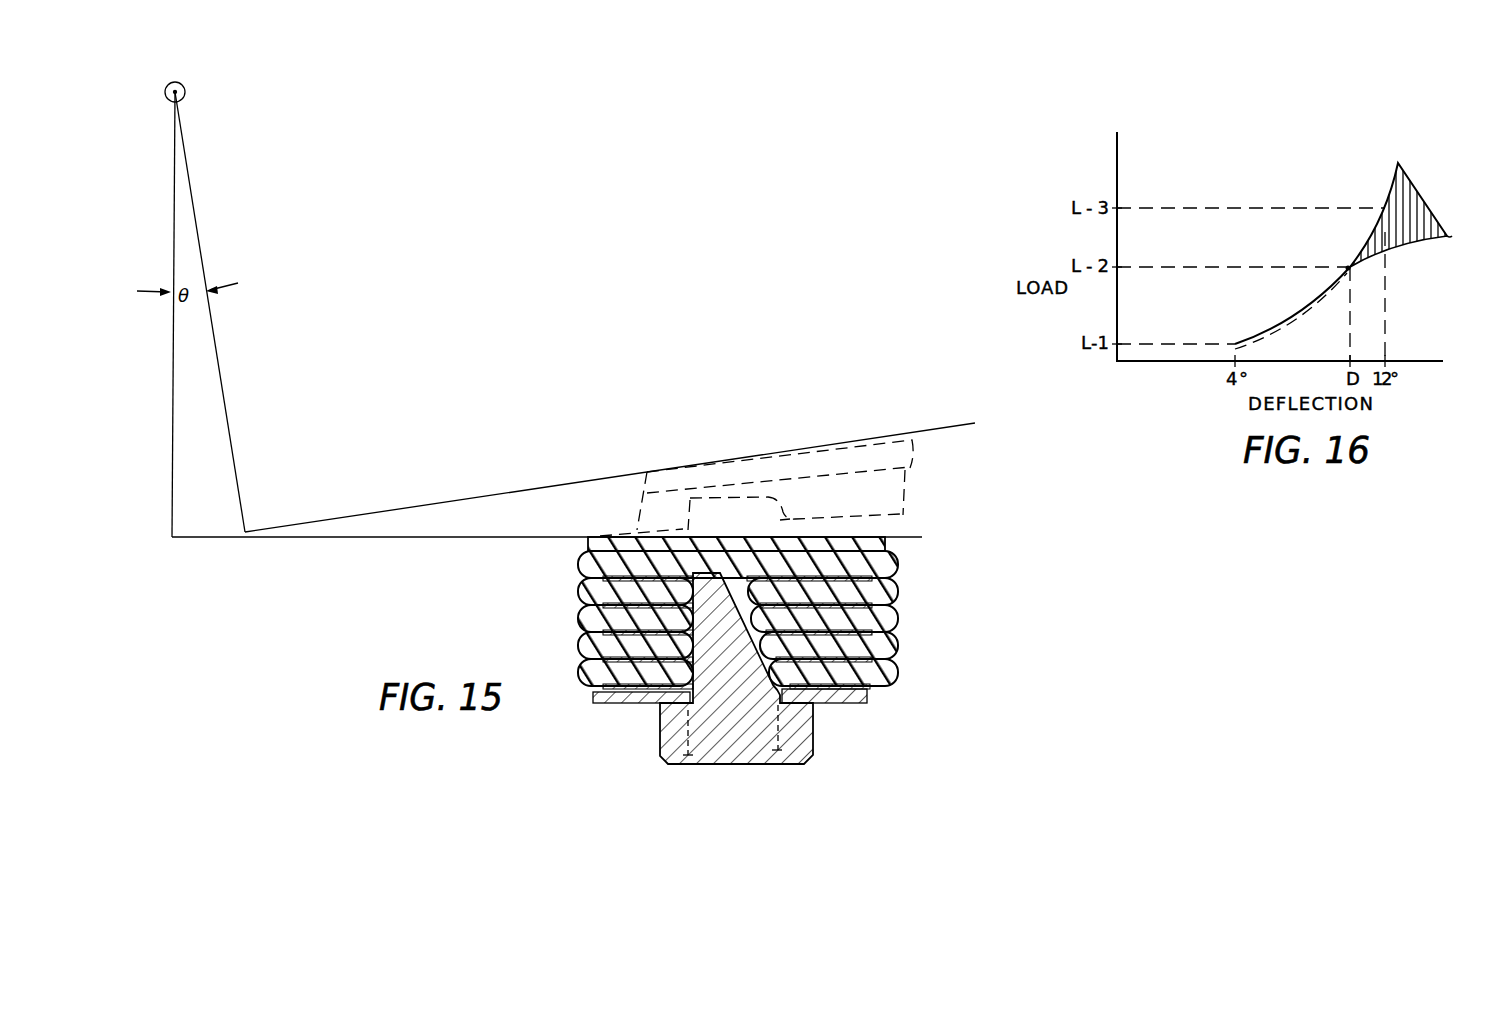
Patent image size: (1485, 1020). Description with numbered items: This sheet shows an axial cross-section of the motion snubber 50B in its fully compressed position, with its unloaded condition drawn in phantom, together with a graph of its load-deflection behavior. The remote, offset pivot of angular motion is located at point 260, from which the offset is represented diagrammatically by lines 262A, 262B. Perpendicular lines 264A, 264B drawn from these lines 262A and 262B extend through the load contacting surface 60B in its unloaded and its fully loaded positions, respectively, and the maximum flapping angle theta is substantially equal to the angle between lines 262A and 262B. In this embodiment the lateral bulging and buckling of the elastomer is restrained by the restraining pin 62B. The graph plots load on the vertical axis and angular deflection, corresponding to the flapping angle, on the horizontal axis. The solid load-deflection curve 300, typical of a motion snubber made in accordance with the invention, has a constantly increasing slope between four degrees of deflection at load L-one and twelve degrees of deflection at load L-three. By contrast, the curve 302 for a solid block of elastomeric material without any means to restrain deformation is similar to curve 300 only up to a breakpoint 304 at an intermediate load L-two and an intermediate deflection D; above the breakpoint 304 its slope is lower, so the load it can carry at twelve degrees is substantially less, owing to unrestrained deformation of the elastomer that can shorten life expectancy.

In FIG. 15, the point 260 is at (186, 88).
In FIG. 15, the line 262A is at (170, 355).
In FIG. 15, the line 262B is at (232, 372).
In FIG. 15, the perpendicular line 264A is at (428, 540).
In FIG. 15, the perpendicular line 264B is at (483, 496).
In FIG. 15, the motion snubber 50B is at (817, 628).
In FIG. 15, the load contacting surface 60B is at (866, 537).
In FIG. 15, the restraining pin 62B is at (708, 711).
In FIG. 16, the load-deflection curve 300 is at (1392, 193).
In FIG. 16, the curve 302 is at (1412, 241).
In FIG. 16, the breakpoint 304 is at (1346, 265).